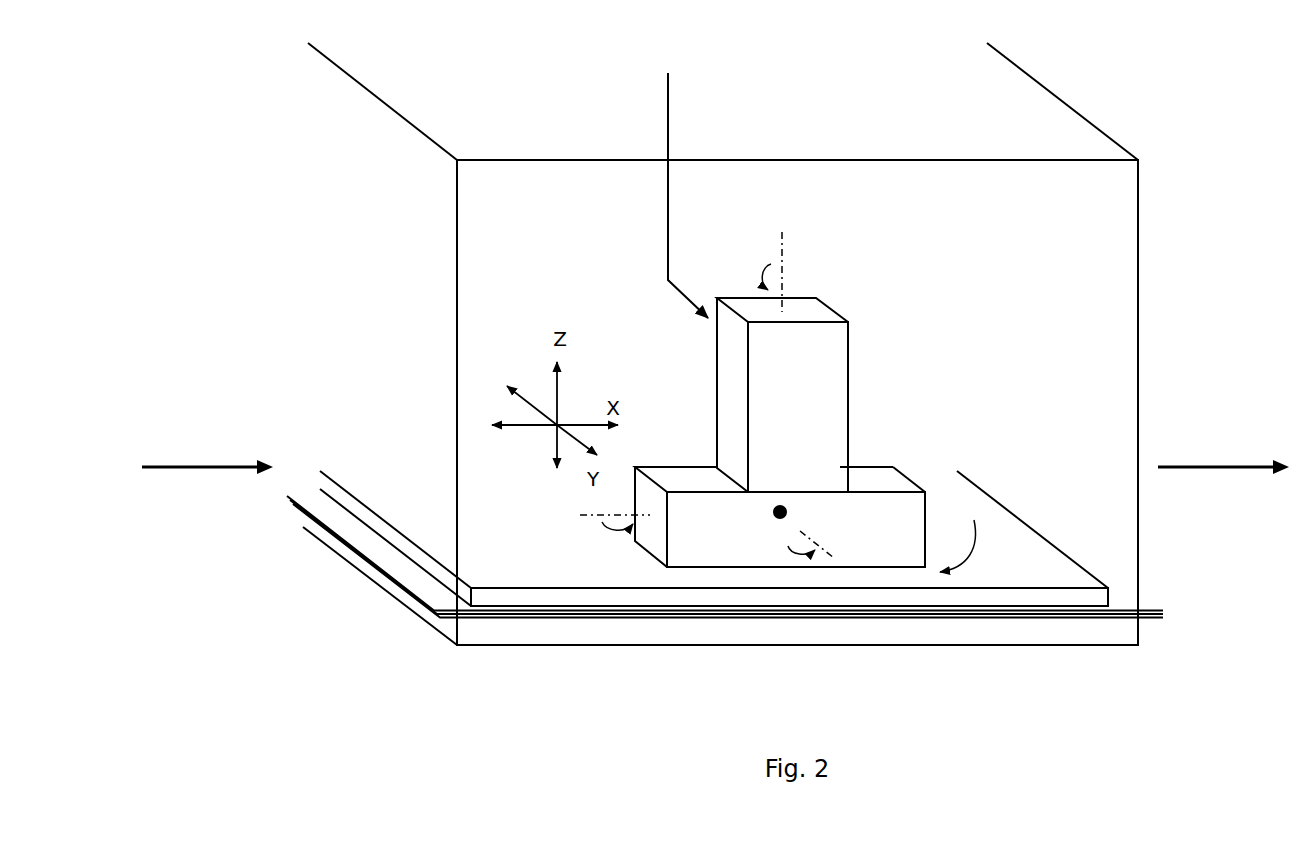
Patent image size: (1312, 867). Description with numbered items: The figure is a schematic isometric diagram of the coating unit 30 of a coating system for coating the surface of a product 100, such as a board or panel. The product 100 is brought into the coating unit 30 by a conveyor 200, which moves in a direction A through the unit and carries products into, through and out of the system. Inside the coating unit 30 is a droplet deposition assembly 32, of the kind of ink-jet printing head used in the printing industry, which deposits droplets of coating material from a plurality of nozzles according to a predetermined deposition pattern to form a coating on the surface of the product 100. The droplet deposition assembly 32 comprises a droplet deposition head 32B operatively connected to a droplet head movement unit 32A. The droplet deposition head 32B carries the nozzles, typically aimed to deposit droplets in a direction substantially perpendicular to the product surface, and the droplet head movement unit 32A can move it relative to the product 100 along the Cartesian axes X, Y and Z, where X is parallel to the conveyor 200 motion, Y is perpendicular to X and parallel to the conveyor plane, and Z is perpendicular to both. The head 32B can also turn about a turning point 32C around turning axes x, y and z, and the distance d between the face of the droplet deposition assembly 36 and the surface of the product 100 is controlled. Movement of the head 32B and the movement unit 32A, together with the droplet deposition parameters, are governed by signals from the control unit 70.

The coating unit 30 is at (984, 733).
The droplet deposition assembly 36 is at (521, 247).
The control unit 70 is at (675, 182).
The product 100 is at (489, 598).
The conveyor 200 is at (437, 617).
The droplet deposition assembly 32 is at (936, 378).
The droplet head movement unit 32A is at (782, 350).
The droplet deposition head 32B is at (769, 519).
The turning point 32C is at (777, 520).